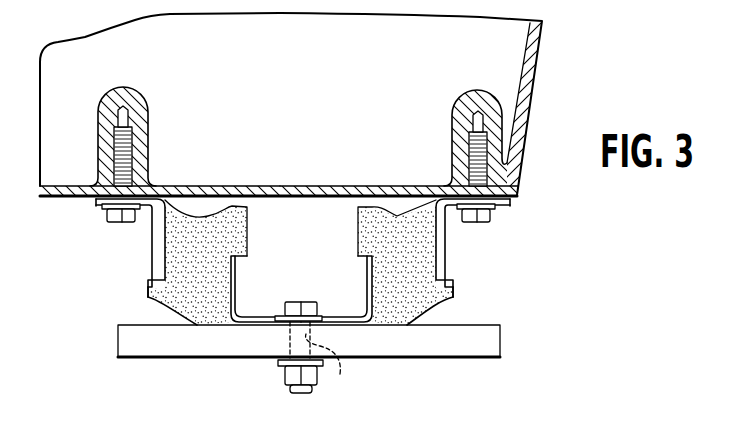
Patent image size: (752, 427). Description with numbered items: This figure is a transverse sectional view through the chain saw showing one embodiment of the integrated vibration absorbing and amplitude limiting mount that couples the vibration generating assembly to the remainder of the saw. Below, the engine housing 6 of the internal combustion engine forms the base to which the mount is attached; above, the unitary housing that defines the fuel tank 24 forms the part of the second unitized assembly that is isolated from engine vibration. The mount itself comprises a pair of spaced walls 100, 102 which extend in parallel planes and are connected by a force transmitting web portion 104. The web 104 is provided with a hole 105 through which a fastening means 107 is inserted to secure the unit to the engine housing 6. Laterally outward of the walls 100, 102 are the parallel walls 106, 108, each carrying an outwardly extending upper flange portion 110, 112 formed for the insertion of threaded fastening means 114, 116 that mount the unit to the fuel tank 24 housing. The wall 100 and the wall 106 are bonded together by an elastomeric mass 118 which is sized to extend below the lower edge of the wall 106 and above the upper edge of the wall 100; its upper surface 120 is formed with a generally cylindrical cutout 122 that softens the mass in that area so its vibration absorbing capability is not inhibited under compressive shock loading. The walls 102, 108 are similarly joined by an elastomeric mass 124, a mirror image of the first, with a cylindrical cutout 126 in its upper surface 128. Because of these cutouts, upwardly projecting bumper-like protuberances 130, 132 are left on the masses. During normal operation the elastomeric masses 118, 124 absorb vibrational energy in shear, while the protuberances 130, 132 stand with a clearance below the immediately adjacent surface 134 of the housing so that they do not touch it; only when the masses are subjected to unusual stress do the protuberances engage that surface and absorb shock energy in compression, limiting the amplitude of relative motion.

The engine housing 6 is at (409, 347).
The fuel tank 24 is at (533, 134).
The spaced wall 100 is at (233, 282).
The spaced wall 102 is at (370, 283).
The force transmitting web portion 104 is at (264, 321).
The hole 105 is at (334, 361).
The wall 106 is at (104, 255).
The fastening means 107 is at (285, 366).
The wall 108 is at (486, 255).
The upper flange portion 110 is at (96, 203).
The upper flange portion 112 is at (510, 205).
The threaded fastening means 114 is at (135, 143).
The threaded fastening means 116 is at (475, 152).
The elastomeric mass 118 is at (150, 296).
The upper surface 120 is at (180, 193).
The cylindrical cutout 122 is at (204, 232).
The elastomeric mass 124 is at (446, 297).
The cylindrical cutout 126 is at (392, 231).
The upper surface 128 is at (427, 197).
The bumper-like protuberance 130 is at (239, 207).
The bumper-like protuberance 132 is at (397, 214).
The adjacent surface 134 is at (285, 198).